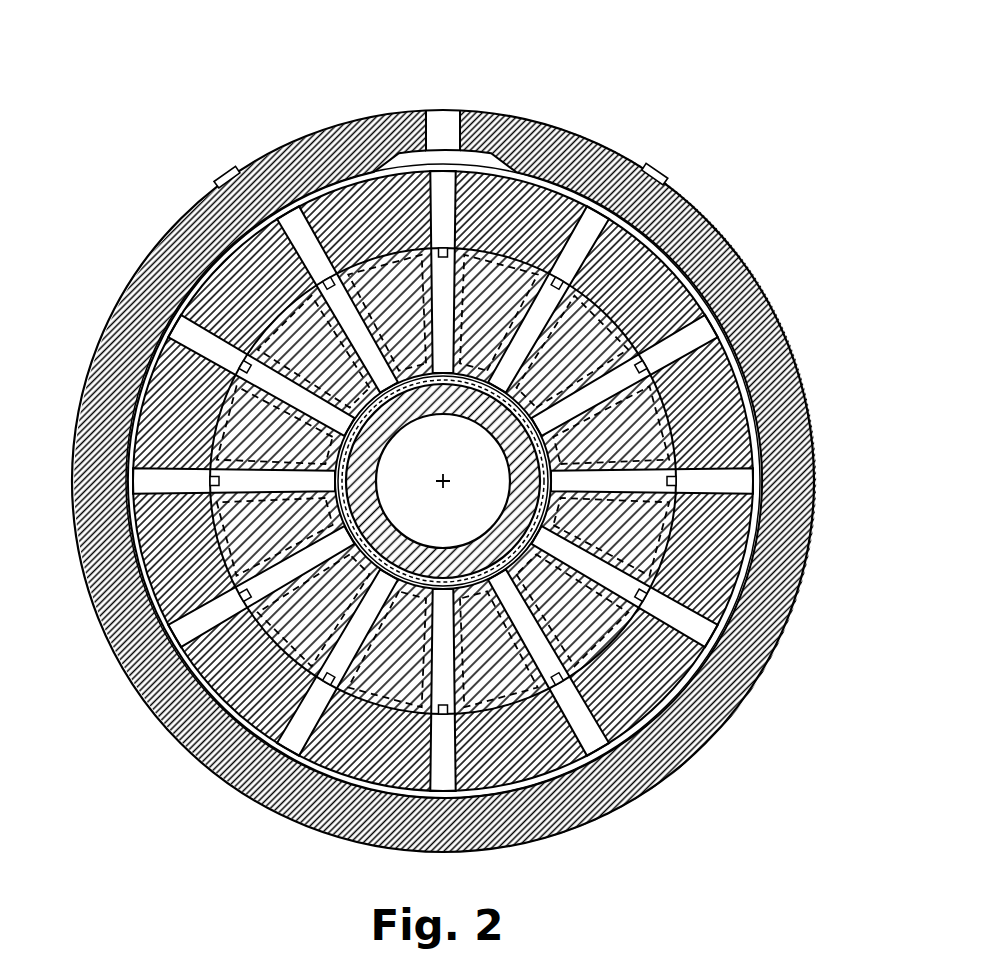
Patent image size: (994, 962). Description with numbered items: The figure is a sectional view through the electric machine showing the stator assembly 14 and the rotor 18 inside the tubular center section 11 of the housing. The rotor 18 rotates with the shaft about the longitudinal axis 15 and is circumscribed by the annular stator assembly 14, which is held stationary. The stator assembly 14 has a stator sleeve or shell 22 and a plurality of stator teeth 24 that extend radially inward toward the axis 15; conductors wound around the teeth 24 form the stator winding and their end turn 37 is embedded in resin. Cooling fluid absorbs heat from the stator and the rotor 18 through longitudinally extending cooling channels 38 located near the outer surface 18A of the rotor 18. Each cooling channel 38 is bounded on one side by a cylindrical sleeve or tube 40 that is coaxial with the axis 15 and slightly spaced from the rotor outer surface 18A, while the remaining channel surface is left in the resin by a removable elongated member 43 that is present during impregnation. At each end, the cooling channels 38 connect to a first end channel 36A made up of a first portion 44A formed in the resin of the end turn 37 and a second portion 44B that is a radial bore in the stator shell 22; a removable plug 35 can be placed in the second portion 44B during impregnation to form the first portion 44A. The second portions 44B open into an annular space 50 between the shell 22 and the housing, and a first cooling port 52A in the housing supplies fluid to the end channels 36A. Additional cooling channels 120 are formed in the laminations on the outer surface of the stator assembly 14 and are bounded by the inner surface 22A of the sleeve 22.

The tubular center section 11 is at (668, 174).
The stator assembly 14 is at (474, 450).
The longitudinal axis 15 is at (441, 483).
The rotor 18 is at (560, 502).
The outer surface of the rotor 18A is at (548, 472).
The stator sleeve or shell 22 is at (655, 672).
The inner surface of sleeve 22A is at (612, 718).
The stator teeth 24 is at (330, 632).
The removable member or plug 35 is at (388, 380).
The first end channel 36A is at (497, 302).
The end turn 37 is at (390, 383).
The cooling channel 38 is at (473, 417).
The cylindrical sleeve or tube 40 is at (530, 765).
The removable elongated member 43 is at (400, 382).
The first portion of end channel 44A is at (530, 448).
The second portion of end channel 44B is at (640, 317).
The annular space 50 is at (226, 170).
The first cooling port 52A is at (440, 132).
The cooling channel 120 is at (433, 715).